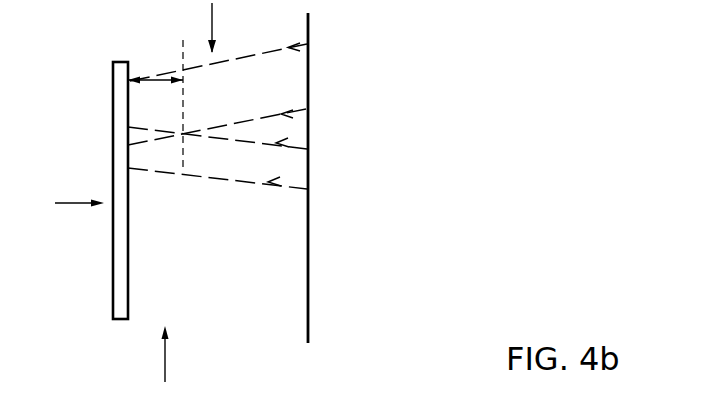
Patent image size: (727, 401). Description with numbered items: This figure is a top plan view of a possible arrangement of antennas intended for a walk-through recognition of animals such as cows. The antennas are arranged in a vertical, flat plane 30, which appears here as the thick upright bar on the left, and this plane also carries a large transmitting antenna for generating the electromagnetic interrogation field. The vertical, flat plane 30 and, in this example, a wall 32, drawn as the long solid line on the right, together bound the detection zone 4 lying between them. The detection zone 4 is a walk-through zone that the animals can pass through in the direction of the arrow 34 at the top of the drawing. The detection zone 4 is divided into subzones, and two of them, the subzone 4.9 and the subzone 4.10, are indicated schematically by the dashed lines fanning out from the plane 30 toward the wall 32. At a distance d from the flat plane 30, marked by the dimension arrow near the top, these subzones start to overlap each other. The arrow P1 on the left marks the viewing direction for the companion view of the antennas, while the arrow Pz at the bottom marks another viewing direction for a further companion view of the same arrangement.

The detection zone 4 is at (203, 217).
The subzone 4.9 is at (278, 143).
The subzone 4.10 is at (270, 182).
The vertical, flat plane 30 is at (123, 276).
The wall 32 is at (308, 207).
The arrow 34 is at (212, 22).
The distance d is at (153, 78).
The arrow P1 is at (77, 191).
The position Pz is at (180, 354).